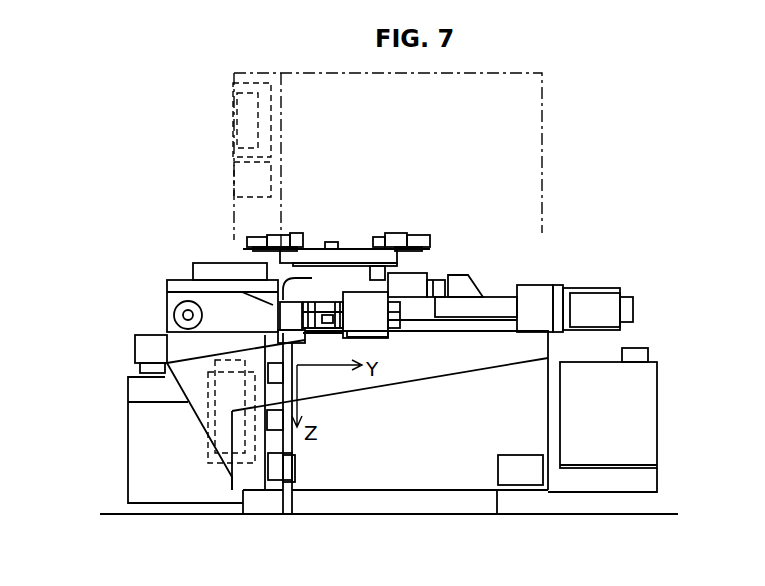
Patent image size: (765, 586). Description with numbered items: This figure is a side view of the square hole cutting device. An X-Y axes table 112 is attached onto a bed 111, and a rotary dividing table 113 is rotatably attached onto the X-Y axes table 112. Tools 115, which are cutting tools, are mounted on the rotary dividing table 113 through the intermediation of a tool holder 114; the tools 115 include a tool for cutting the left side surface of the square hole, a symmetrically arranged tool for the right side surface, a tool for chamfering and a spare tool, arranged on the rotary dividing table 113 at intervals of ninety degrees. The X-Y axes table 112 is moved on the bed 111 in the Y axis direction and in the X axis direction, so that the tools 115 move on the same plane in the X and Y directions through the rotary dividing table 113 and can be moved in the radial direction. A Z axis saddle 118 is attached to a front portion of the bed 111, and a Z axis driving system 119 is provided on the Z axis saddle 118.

The bed 111 is at (389, 500).
The X-Y axes table 112 is at (413, 278).
The rotary dividing table 113 is at (358, 252).
The tool holder 114 is at (297, 233).
The tools 115 is at (251, 234).
The Z axis saddle 118 is at (193, 388).
The Z axis driving system 119 is at (250, 395).